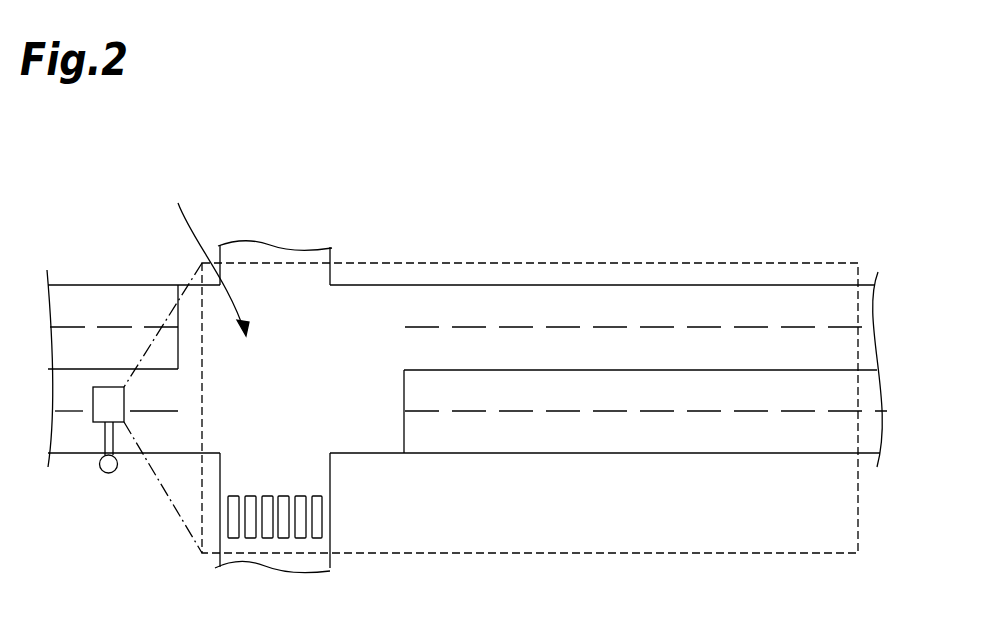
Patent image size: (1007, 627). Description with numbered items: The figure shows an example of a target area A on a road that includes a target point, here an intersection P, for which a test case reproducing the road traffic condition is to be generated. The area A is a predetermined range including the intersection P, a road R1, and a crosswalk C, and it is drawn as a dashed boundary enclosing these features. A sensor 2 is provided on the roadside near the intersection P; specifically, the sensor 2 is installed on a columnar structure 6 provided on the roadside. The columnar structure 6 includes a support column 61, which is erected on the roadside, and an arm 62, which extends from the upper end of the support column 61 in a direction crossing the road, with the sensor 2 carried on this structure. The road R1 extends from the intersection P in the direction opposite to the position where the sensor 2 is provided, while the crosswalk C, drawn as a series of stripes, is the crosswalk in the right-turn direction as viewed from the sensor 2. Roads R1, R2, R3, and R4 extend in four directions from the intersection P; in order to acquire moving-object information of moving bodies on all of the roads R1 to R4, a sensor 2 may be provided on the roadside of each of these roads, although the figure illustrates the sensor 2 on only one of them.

The sensor 2 is at (93, 400).
The columnar structure 6 is at (104, 497).
The support column 61 is at (112, 476).
The arm 62 is at (103, 444).
The target area A is at (733, 262).
The crosswalk C is at (328, 518).
The intersection P is at (210, 254).
The road R1 is at (567, 285).
The road R2 is at (106, 285).
The road R3 is at (330, 545).
The road R4 is at (332, 257).